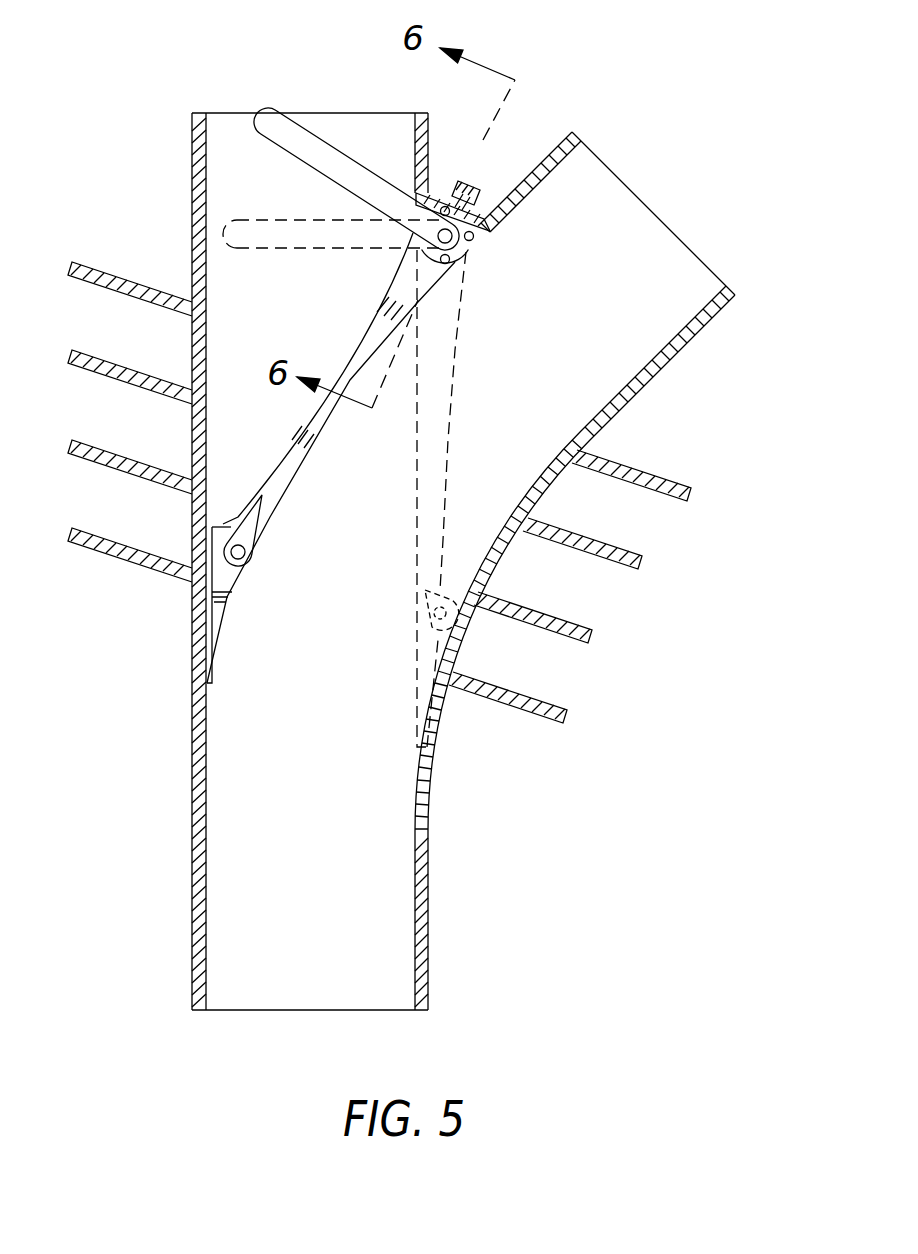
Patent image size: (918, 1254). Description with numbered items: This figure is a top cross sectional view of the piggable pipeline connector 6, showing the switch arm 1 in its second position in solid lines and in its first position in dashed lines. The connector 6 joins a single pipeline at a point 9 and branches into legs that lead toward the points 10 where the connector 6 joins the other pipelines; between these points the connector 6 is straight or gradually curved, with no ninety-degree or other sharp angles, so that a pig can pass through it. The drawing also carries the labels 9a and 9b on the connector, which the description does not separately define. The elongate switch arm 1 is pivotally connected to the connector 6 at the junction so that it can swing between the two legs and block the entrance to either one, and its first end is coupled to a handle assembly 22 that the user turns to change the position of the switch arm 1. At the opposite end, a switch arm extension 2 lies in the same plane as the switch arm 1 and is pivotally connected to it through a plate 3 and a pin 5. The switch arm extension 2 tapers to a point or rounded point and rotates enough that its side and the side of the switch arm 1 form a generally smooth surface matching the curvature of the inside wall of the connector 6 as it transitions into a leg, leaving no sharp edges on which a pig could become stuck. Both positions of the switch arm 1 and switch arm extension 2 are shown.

The switch arm 1 is at (283, 475).
The switch arm extension 2 is at (213, 632).
The plate 3 is at (252, 523).
The pin 5 is at (240, 562).
The piggable pipeline connector 6 is at (315, 917).
The point 9 is at (257, 1012).
The branch channel 9a is at (584, 277).
The inlet channel 9b is at (262, 195).
The point 10 is at (230, 112).
The handle assembly 22 is at (515, 142).